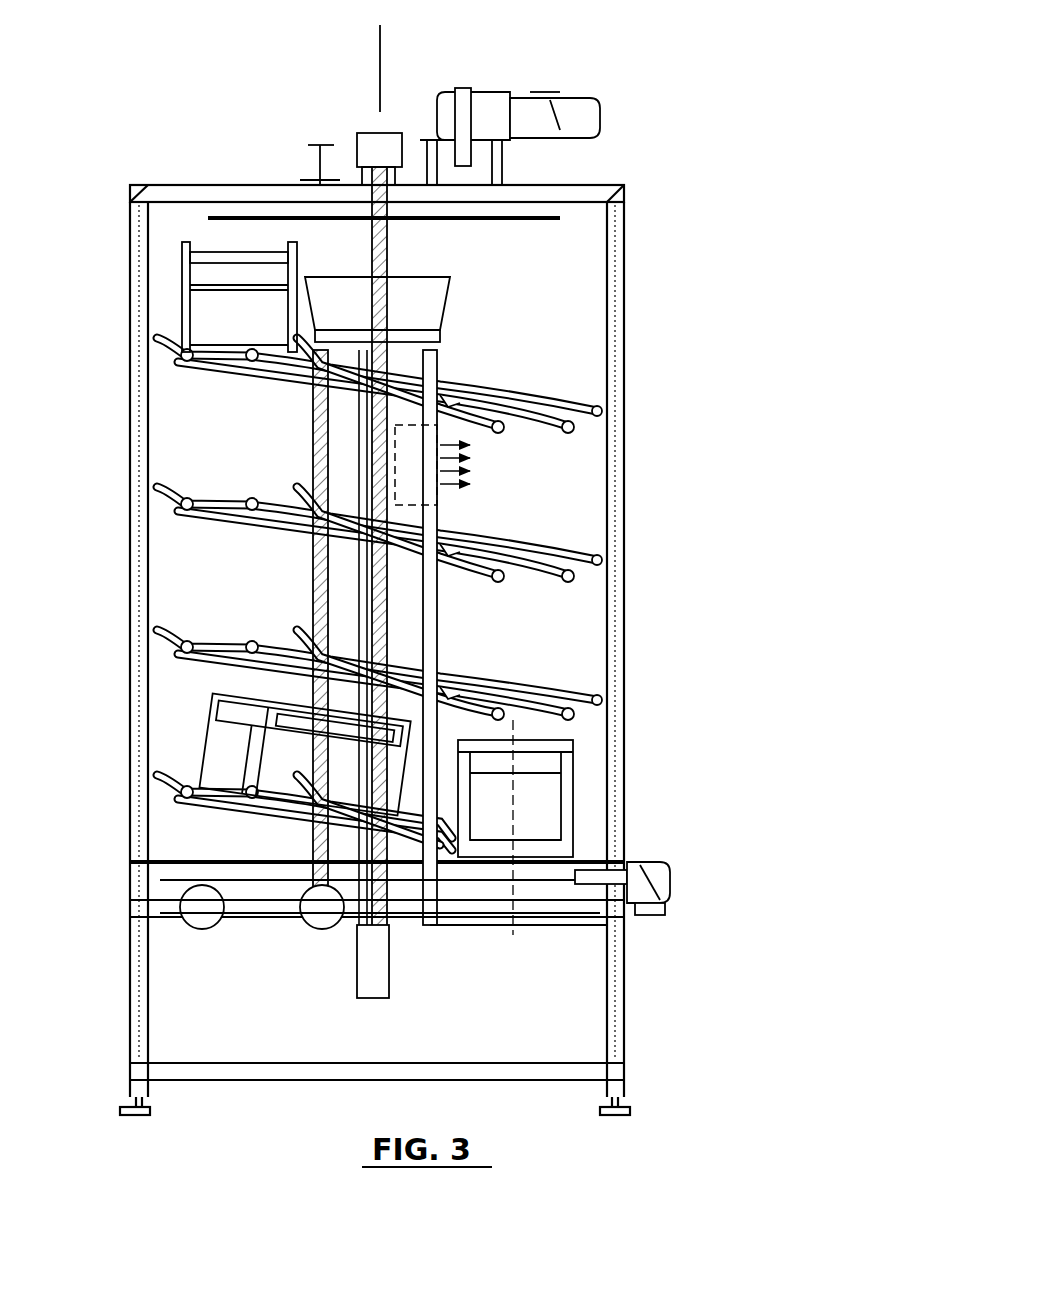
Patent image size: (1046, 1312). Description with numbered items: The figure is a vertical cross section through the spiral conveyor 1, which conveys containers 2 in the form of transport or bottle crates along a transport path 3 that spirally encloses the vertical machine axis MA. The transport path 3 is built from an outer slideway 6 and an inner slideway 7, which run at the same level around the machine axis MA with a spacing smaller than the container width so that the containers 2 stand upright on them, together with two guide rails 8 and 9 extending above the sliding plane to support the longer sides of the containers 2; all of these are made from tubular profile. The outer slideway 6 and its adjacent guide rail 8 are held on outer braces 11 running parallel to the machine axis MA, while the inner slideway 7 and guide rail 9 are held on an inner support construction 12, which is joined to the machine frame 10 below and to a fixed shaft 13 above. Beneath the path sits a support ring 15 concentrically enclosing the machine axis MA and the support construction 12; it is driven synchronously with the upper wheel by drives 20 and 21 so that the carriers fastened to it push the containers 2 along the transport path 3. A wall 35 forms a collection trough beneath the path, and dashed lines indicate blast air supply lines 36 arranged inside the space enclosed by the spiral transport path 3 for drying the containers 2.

The spiral conveyor 1 is at (650, 218).
The container 2 is at (575, 807).
The transport path 3 is at (590, 500).
The outer slideway 6 is at (572, 420).
The inner slideway 7 is at (490, 420).
The guide rail 8 is at (545, 393).
The guide rail 9 is at (455, 395).
The machine frame 10 is at (627, 425).
The outer brace 11 is at (135, 615).
The inner support construction 12 is at (312, 568).
The fixed shaft 13 is at (390, 256).
The support ring 15 is at (252, 920).
The drive 20 is at (575, 120).
The drive 21 is at (668, 868).
The wall 35 is at (490, 920).
The supply lines for blast air 36 is at (410, 444).
The machine axis MA is at (380, 40).